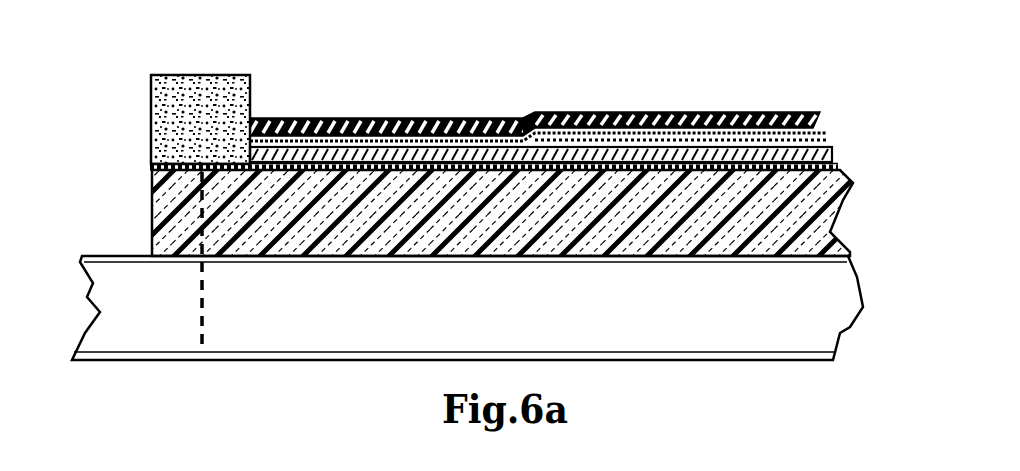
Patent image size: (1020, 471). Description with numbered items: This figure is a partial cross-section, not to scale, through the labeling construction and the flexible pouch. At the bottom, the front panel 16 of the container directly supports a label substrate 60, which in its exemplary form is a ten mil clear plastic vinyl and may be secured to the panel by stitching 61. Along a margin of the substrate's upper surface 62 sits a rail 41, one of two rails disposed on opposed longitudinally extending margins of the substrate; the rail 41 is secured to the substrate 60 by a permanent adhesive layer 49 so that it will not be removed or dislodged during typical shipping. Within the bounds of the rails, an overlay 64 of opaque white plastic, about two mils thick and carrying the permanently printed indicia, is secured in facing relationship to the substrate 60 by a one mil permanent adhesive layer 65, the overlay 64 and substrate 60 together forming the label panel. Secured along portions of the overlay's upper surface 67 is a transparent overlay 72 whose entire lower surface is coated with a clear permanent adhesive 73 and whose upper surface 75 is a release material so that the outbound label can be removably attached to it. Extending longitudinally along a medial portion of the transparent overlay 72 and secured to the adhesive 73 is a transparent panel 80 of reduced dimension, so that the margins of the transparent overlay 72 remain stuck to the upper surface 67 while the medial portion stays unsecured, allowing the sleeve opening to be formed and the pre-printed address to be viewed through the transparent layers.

The front panel 16 is at (127, 283).
The rail 41 is at (151, 92).
The permanent adhesive layer 49 is at (150, 167).
The label substrate 60 is at (622, 258).
The stitching 61 is at (205, 310).
The upper surface 62 is at (832, 152).
The overlay 64 is at (455, 120).
The permanent adhesive layer 65 is at (293, 120).
The upper surface 67 is at (332, 120).
The transparent overlay 72 is at (725, 112).
The clear permanent adhesive 73 is at (822, 130).
The upper surface 75 is at (558, 112).
The transparent panel 80 is at (632, 112).